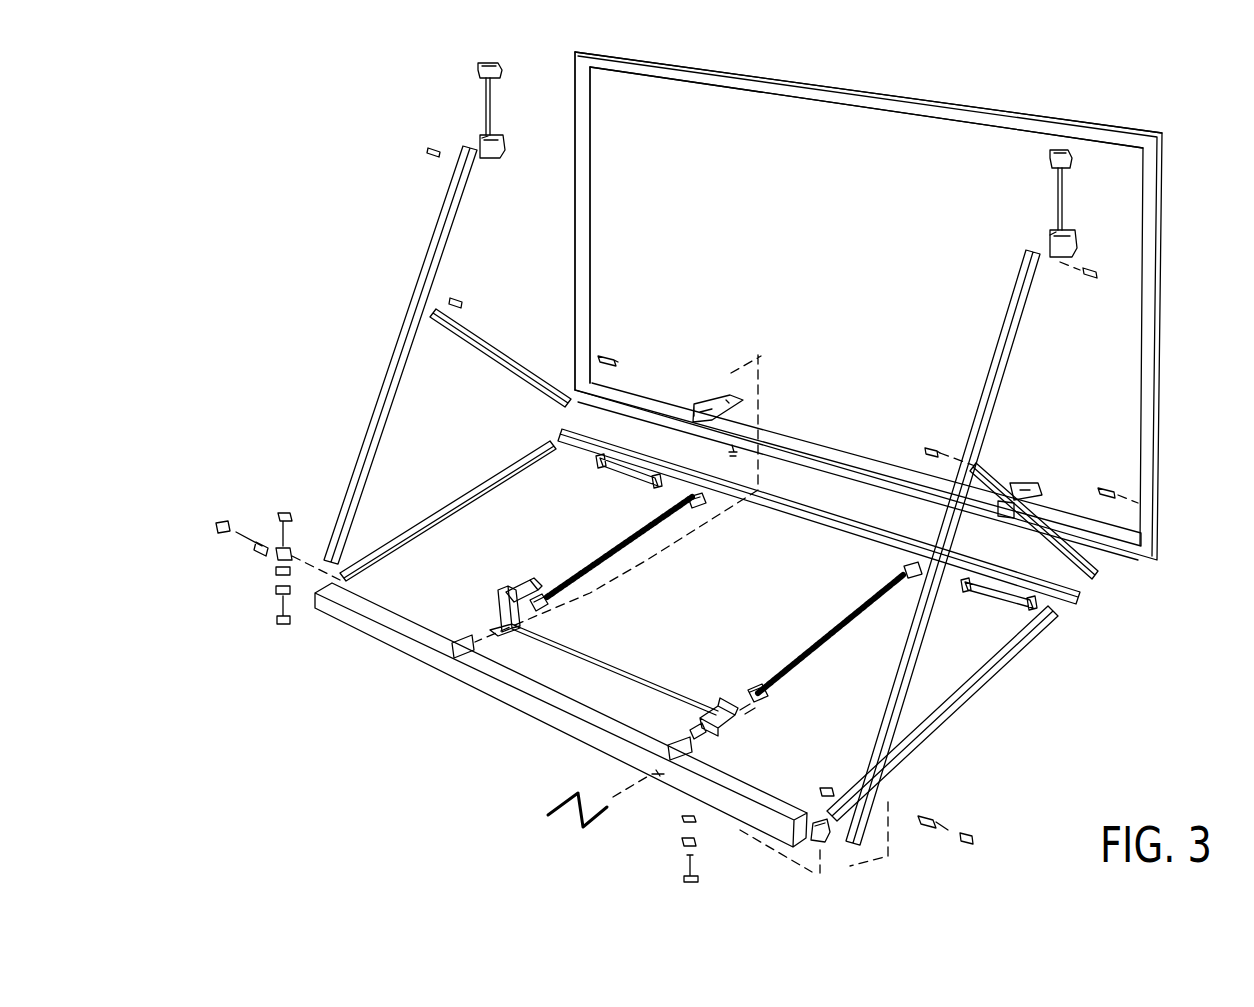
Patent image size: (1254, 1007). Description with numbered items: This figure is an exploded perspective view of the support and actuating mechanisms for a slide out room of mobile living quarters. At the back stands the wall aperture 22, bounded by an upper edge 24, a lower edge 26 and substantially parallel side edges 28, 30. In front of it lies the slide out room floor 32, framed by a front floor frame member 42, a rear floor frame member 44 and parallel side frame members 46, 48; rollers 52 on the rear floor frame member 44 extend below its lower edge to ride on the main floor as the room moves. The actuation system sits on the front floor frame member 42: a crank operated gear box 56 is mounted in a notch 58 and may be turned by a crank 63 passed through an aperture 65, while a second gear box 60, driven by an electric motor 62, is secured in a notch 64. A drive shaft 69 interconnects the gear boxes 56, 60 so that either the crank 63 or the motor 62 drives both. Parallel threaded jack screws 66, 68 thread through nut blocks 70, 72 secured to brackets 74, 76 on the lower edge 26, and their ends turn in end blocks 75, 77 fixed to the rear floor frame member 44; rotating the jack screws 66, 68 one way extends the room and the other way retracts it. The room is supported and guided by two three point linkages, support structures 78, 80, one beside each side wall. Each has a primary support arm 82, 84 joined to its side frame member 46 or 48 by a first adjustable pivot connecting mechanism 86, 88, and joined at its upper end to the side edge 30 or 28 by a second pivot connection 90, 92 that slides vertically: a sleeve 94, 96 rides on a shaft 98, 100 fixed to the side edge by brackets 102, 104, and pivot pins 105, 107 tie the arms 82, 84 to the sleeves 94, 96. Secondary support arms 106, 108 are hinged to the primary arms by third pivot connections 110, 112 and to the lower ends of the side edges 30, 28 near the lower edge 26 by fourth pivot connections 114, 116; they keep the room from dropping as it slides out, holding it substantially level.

The aperture 22 is at (1078, 437).
The upper edge 24 is at (905, 118).
The lower edge 26 is at (845, 455).
The side edge 28 is at (583, 228).
The side edge 30 is at (1160, 400).
The slide out room floor 32 is at (995, 120).
The front floor frame member 42 is at (561, 712).
The rear floor frame member 44 is at (1084, 597).
The side frame member 46 is at (1003, 679).
The side frame member 48 is at (459, 499).
The rollers 52 is at (621, 464).
The crank operated gear box 56 is at (715, 707).
The notch 58 is at (513, 645).
The gear box 60 is at (499, 584).
The electric motor 62 is at (524, 577).
The crank 63 is at (564, 794).
The notch 64 is at (462, 644).
The aperture 65 is at (659, 784).
The threaded jack screw 66 is at (814, 659).
The threaded jack screw 68 is at (619, 546).
The drive shaft 69 is at (639, 677).
The nut block 70 is at (755, 689).
The nut block 72 is at (549, 609).
The bracket 74 is at (1023, 480).
The end block 75 is at (699, 505).
The bracket 76 is at (714, 398).
The end block 77 is at (904, 569).
The support structure 78 is at (991, 506).
The support structure 80 is at (763, 295).
The primary support arm 82 is at (1019, 337).
The primary support arm 84 is at (455, 230).
The first adjustable pivot connecting mechanism 86 is at (827, 844).
The first adjustable pivot connecting mechanism 88 is at (270, 526).
The second pivot connection 90 is at (1040, 213).
The second pivot connection 92 is at (819, 148).
The sleeve 94 is at (1048, 240).
The sleeve 96 is at (484, 137).
The shaft 98 is at (1068, 204).
The shaft 100 is at (492, 108).
The bracket 102 is at (504, 150).
The bracket 104 is at (497, 68).
The pivot pin 105 is at (1090, 276).
The secondary support arm 106 is at (1040, 526).
The pivot pin 107 is at (429, 151).
The secondary support arm 108 is at (494, 348).
The third pivot connection 110 is at (930, 447).
The third pivot connection 112 is at (456, 298).
The fourth pivot connection 114 is at (1130, 491).
The fourth pivot connection 116 is at (608, 355).